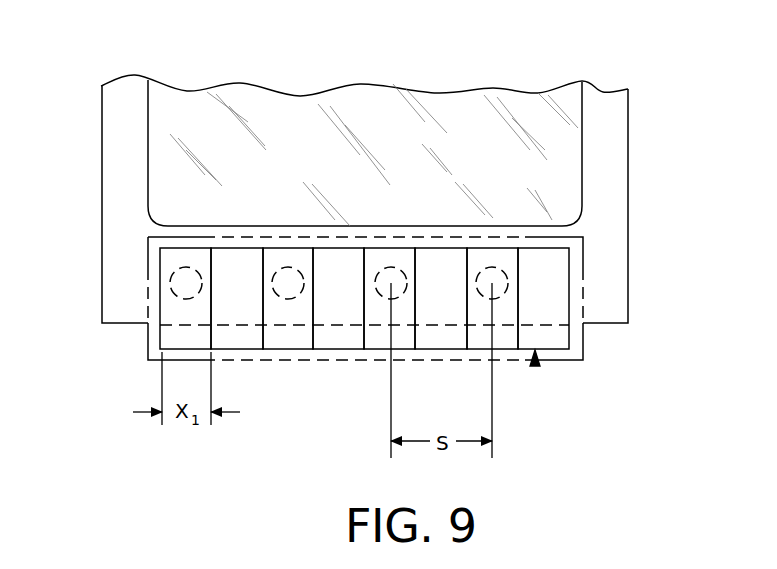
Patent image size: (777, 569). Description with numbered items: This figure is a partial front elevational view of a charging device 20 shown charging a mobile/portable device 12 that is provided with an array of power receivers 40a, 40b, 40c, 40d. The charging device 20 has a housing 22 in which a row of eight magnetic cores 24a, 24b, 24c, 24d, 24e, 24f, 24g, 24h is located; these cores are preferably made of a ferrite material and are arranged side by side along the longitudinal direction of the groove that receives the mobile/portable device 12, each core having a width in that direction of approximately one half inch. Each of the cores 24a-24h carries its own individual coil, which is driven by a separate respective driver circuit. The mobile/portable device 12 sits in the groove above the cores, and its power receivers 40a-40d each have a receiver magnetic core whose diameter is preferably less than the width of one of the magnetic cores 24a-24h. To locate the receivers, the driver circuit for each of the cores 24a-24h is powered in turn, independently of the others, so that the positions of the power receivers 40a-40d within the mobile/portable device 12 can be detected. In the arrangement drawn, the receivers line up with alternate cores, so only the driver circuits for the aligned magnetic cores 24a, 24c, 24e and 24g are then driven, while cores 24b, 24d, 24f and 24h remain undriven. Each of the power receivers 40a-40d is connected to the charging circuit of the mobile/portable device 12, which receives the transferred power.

The mobile/portable device 12 is at (628, 122).
The charging device 20 is at (535, 364).
The housing 22 is at (583, 340).
The magnetic core 24a is at (168, 337).
The magnetic core 24b is at (237, 338).
The magnetic core 24c is at (287, 338).
The magnetic core 24d is at (337, 338).
The magnetic core 24e is at (380, 338).
The magnetic core 24f is at (440, 267).
The magnetic core 24g is at (503, 340).
The magnetic core 24h is at (558, 340).
The power receiver 40a is at (172, 275).
The power receiver 40b is at (286, 267).
The power receiver 40c is at (388, 268).
The power receiver 40d is at (503, 273).